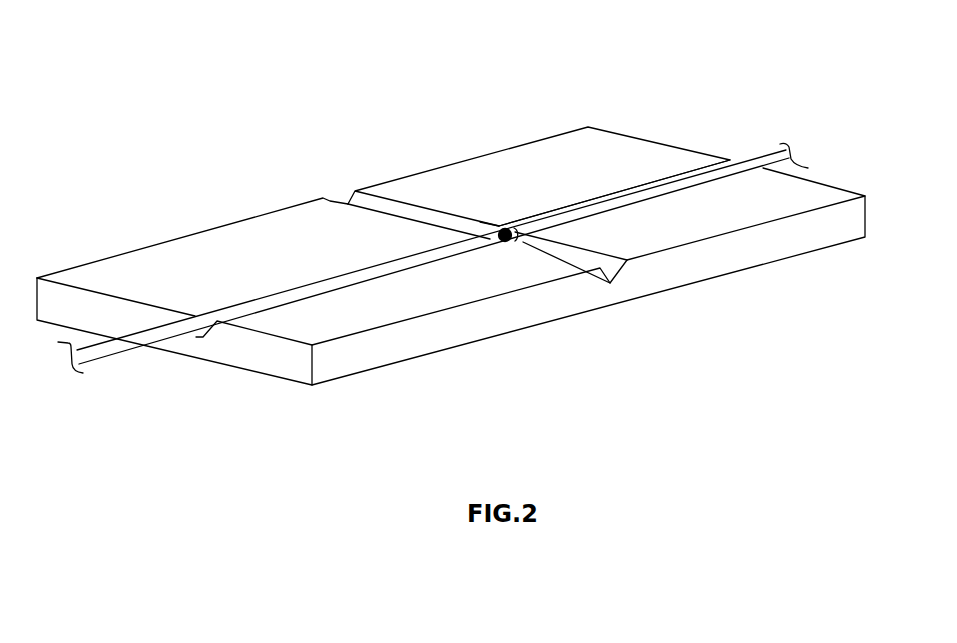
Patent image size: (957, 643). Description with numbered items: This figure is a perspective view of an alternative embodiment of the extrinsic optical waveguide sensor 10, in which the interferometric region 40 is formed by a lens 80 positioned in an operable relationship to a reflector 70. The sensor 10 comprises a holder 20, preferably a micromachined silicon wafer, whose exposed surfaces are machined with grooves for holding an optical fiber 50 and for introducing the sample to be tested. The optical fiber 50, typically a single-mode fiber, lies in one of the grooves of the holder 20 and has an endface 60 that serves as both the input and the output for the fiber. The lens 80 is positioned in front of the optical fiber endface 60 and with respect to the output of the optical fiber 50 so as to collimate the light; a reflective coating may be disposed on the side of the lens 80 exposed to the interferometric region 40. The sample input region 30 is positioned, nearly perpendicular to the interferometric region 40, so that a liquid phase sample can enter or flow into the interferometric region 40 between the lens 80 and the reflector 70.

The extrinsic optical waveguide sensor 10 is at (451, 227).
The holder 20 is at (452, 185).
The sample input region 30 is at (613, 267).
The interferometric region 40 is at (498, 230).
The optical fiber 50 is at (117, 345).
The optical fiber endface 60 is at (492, 232).
The reflector 70 is at (520, 246).
The lens 80 is at (503, 243).